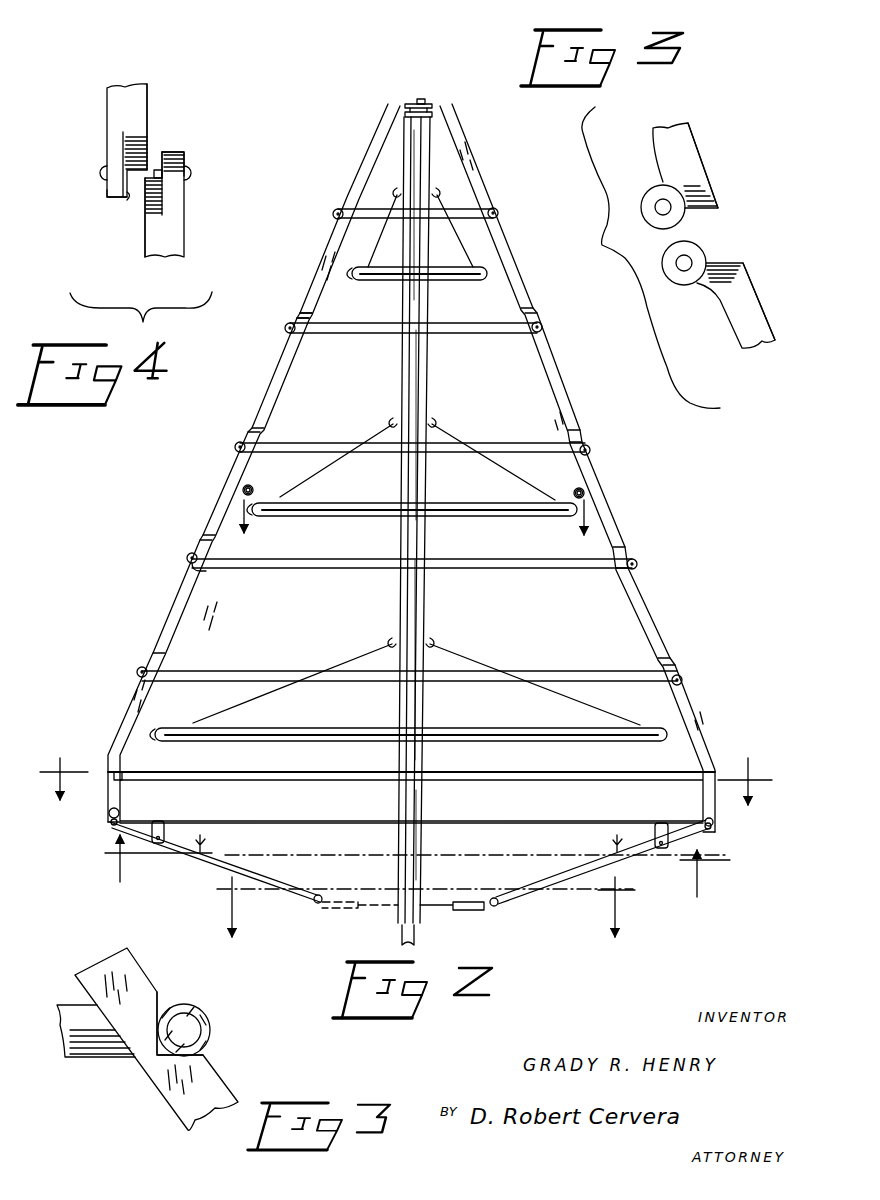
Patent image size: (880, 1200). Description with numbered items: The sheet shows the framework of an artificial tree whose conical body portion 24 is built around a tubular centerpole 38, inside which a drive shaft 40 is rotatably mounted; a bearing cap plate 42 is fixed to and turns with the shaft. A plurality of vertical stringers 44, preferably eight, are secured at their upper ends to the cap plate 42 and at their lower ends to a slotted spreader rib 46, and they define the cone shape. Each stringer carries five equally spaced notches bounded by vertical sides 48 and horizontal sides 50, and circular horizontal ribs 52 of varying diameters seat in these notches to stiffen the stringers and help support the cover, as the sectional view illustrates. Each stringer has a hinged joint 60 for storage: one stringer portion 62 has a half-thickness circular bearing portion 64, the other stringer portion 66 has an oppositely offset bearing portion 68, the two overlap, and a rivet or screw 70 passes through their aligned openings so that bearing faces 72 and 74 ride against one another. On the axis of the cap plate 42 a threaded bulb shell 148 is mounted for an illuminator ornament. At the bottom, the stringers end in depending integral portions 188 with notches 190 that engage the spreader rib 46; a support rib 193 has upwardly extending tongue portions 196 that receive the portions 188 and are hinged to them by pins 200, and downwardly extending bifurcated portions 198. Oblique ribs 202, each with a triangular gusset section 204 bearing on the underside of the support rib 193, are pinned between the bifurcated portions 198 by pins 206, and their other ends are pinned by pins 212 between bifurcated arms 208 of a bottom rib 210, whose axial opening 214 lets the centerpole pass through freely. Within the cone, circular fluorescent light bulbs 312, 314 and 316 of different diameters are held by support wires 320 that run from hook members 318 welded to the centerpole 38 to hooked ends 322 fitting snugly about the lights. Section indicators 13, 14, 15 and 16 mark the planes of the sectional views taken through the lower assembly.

In FIG. 2, the conical body portion 24 is at (203, 470).
In FIG. 2, the tubular centerpole 38 is at (431, 608).
In FIG. 2, the drive shaft 40 is at (415, 937).
In FIG. 2, the bearing cap plate 42 is at (431, 106).
In FIG. 2, the vertical stringers 44 is at (262, 398).
In FIG. 5, the vertical stringers 44 is at (707, 138).
In FIG. 4, the vertical stringers 44 is at (159, 81).
In FIG. 3, the vertical stringers 44 is at (146, 966).
In FIG. 2, the spreader rib 46 is at (495, 783).
In FIG. 2, the vertical sides 48 is at (297, 318).
In FIG. 3, the vertical sides 48 is at (157, 1003).
In FIG. 2, the horizontal sides 50 is at (206, 572).
In FIG. 3, the horizontal sides 50 is at (207, 1038).
In FIG. 2, the circular horizontal ribs 52 is at (377, 321).
In FIG. 3, the circular horizontal ribs 52 is at (196, 1006).
In FIG. 2, the hinged joint 60 is at (242, 492).
In FIG. 5, the first stringer portion 62 is at (712, 162).
In FIG. 4, the first stringer portion 62 is at (148, 111).
In FIG. 5, the circular bearing portion 64 is at (653, 191).
In FIG. 4, the circular bearing portion 64 is at (106, 195).
In FIG. 5, the second stringer portion 66 is at (758, 298).
In FIG. 4, the second stringer portion 66 is at (184, 221).
In FIG. 2, the circular bearing portion 68 is at (577, 492).
In FIG. 5, the circular bearing portion 68 is at (704, 250).
In FIG. 4, the circular bearing portion 68 is at (184, 156).
In FIG. 2, the rivet or screw 70 is at (252, 490).
In FIG. 5, the rivet or screw 70 is at (684, 268).
In FIG. 4, the rivet or screw 70 is at (100, 176).
In FIG. 5, the bearing face 72 is at (650, 218).
In FIG. 4, the bearing face 72 is at (128, 199).
In FIG. 4, the bearing face 74 is at (156, 164).
In FIG. 2, the threaded bulb shell 148 is at (420, 98).
In FIG. 2, the vertically depending integral portions 188 is at (126, 793).
In FIG. 2, the notches 190 is at (124, 774).
In FIG. 2, the support rib 193 is at (284, 806).
In FIG. 2, the tongue portions 196 is at (109, 824).
In FIG. 2, the bifurcated portions 198 is at (658, 822).
In FIG. 2, the pins 200 is at (110, 812).
In FIG. 2, the oblique ribs 202 is at (540, 889).
In FIG. 2, the gusset section 204 is at (613, 846).
In FIG. 2, the pins 206 is at (157, 843).
In FIG. 2, the bifurcated arms 208 is at (494, 906).
In FIG. 2, the bottom rib 210 is at (466, 912).
In FIG. 2, the pins 212 is at (320, 903).
In FIG. 2, the axial opening 214 is at (357, 908).
In FIG. 2, the circular fluorescent light bulb 312 is at (476, 280).
In FIG. 2, the circular fluorescent light bulb 314 is at (480, 511).
In FIG. 2, the circular fluorescent light bulb 316 is at (483, 728).
In FIG. 2, the hook members 318 is at (446, 187).
In FIG. 2, the support wires 320 is at (383, 236).
In FIG. 2, the hooked ends 322 is at (354, 275).
In FIG. 2, the section line 13 is at (414, 528).
In FIG. 2, the section line 14 is at (426, 922).
In FIG. 2, the section line 15 is at (414, 876).
In FIG. 2, the section line 16 is at (405, 764).